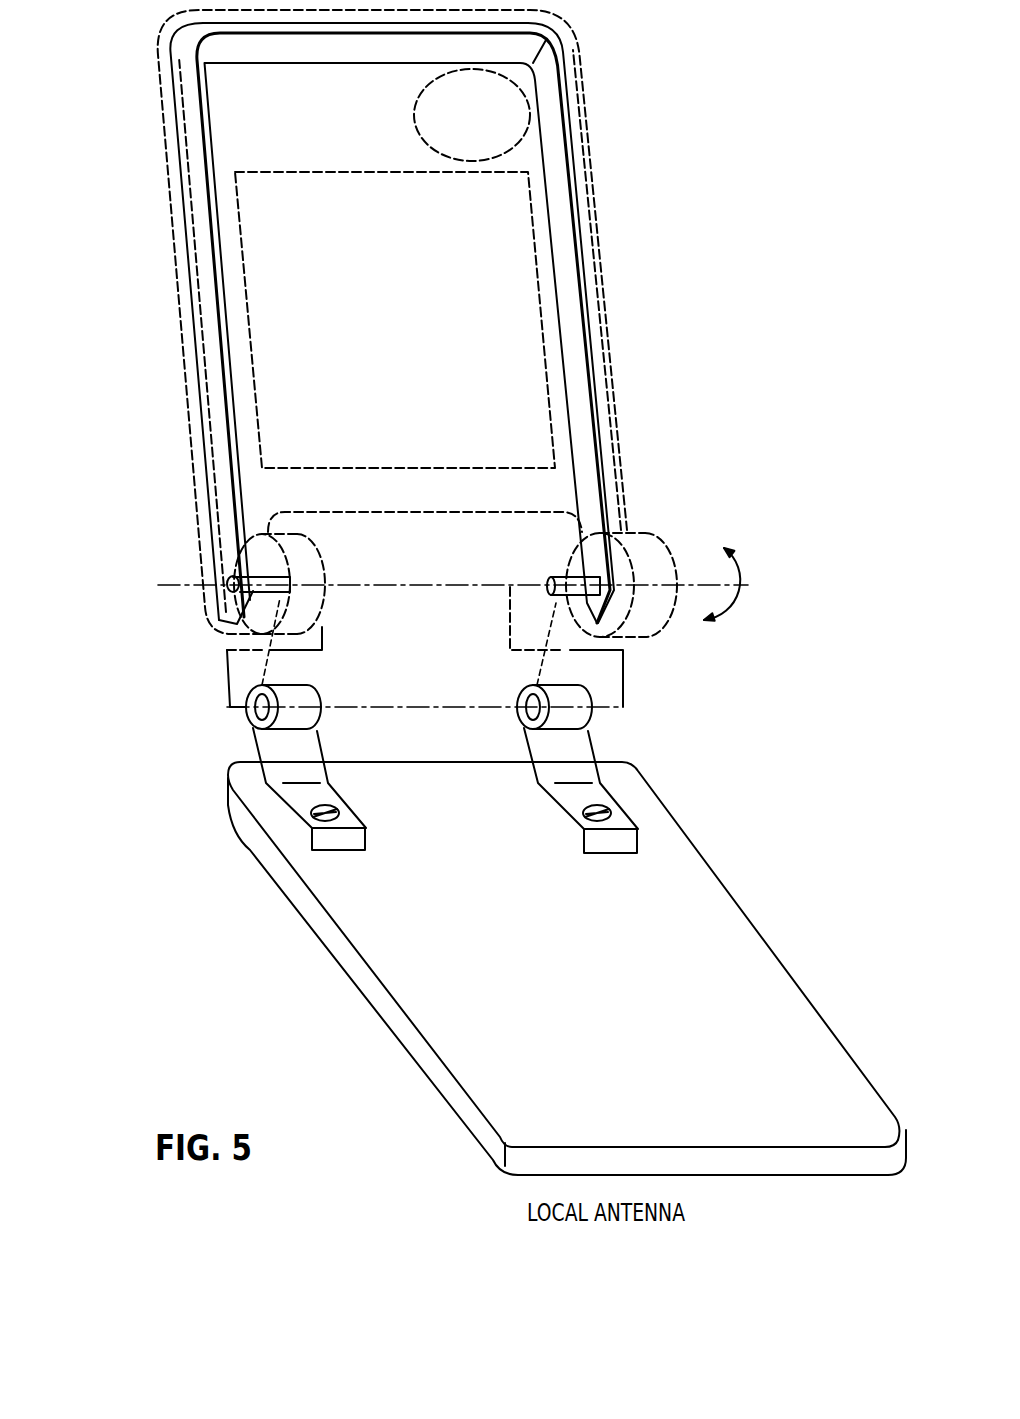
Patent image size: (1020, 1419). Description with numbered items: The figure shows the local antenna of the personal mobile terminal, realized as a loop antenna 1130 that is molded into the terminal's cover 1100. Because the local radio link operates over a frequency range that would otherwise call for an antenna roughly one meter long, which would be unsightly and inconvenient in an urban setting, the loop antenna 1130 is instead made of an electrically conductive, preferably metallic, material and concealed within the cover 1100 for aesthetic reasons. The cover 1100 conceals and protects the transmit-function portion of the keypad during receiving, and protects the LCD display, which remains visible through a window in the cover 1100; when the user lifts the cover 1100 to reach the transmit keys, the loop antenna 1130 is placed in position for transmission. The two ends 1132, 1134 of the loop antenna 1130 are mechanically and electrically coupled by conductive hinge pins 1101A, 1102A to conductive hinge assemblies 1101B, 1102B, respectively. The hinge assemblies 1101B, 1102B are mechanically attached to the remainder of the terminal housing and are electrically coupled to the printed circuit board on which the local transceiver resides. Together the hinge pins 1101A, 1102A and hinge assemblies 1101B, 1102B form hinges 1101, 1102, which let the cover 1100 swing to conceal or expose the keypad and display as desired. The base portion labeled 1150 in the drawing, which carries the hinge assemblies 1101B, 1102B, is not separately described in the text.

The cover 1100 is at (436, 322).
The loop antenna 1130 is at (581, 349).
The end of loop antenna 1132 is at (190, 530).
The end of loop antenna 1134 is at (636, 511).
The hinge 1101 is at (189, 713).
The conductive hinge pin 1101A is at (272, 600).
The conductive hinge assembly 1101B is at (240, 720).
The hinge 1102 is at (694, 715).
The conductive hinge pin 1102A is at (560, 603).
The conductive hinge assembly 1102B is at (612, 719).
The base / local antenna 1150 is at (598, 979).